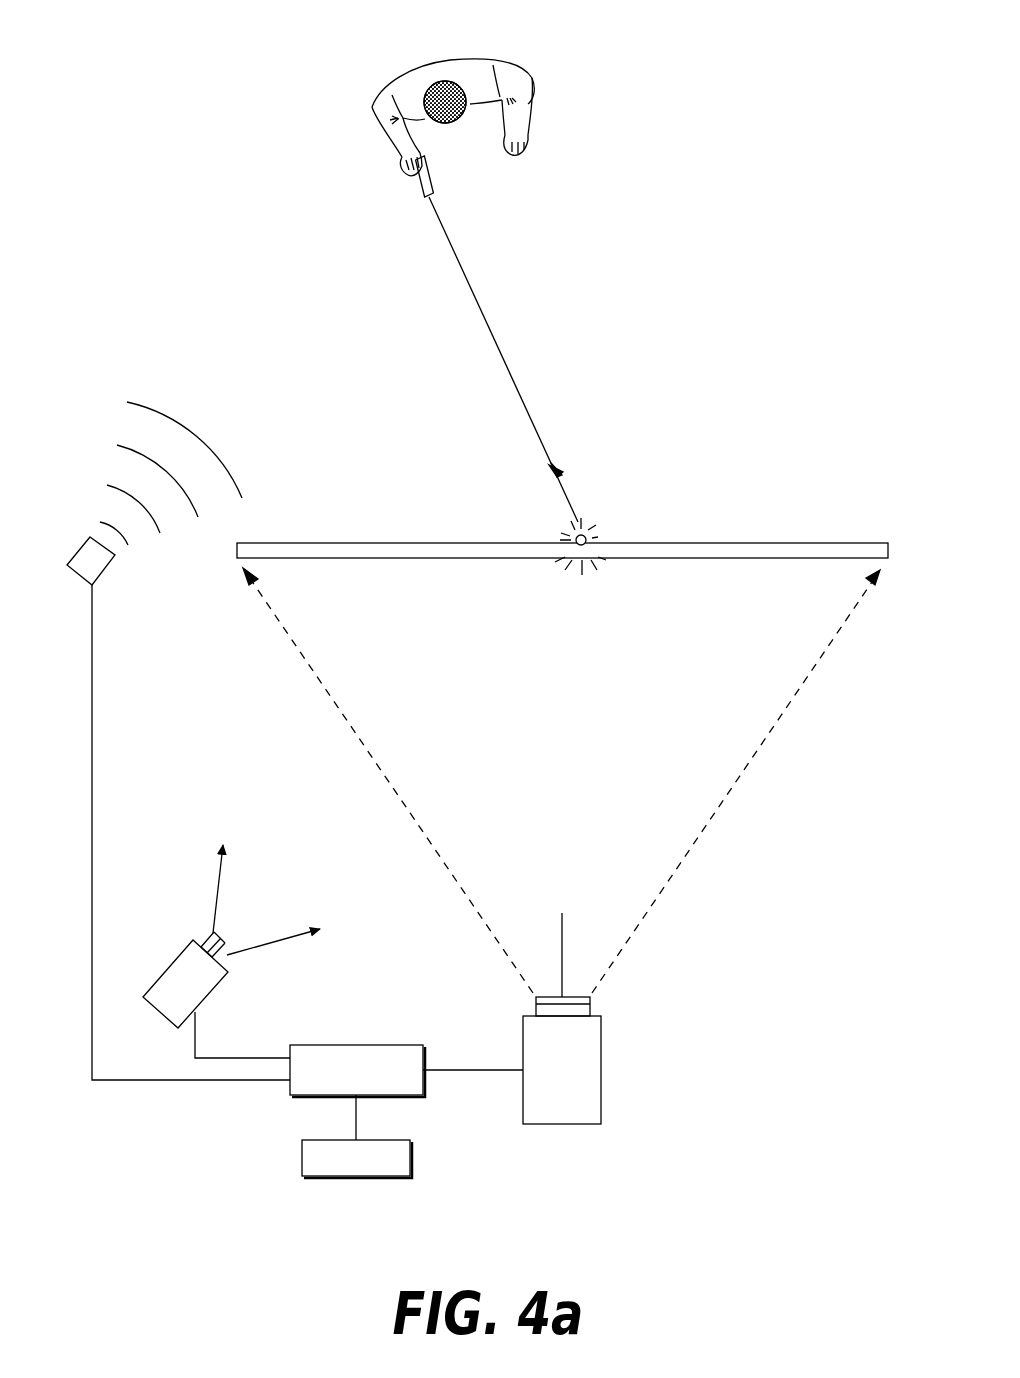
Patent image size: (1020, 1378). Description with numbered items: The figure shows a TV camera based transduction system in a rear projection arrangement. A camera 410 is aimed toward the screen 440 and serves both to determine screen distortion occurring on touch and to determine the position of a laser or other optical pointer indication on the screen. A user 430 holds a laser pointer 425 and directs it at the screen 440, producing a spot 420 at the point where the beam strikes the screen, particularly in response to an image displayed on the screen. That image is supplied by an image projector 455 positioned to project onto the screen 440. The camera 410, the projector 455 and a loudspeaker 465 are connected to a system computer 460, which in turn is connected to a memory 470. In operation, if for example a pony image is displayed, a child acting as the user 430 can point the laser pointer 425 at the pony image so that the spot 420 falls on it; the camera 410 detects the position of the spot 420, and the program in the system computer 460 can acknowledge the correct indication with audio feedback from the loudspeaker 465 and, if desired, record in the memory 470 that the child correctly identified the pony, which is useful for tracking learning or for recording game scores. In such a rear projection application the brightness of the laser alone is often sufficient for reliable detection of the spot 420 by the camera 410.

The camera 410 is at (167, 965).
The spot 420 is at (585, 530).
The laser pointer 425 is at (432, 190).
The user 430 is at (440, 60).
The screen 440 is at (883, 542).
The image projector 455 is at (601, 1070).
The system computer 460 is at (323, 1045).
The loudspeaker 465 is at (108, 568).
The memory 470 is at (410, 1157).